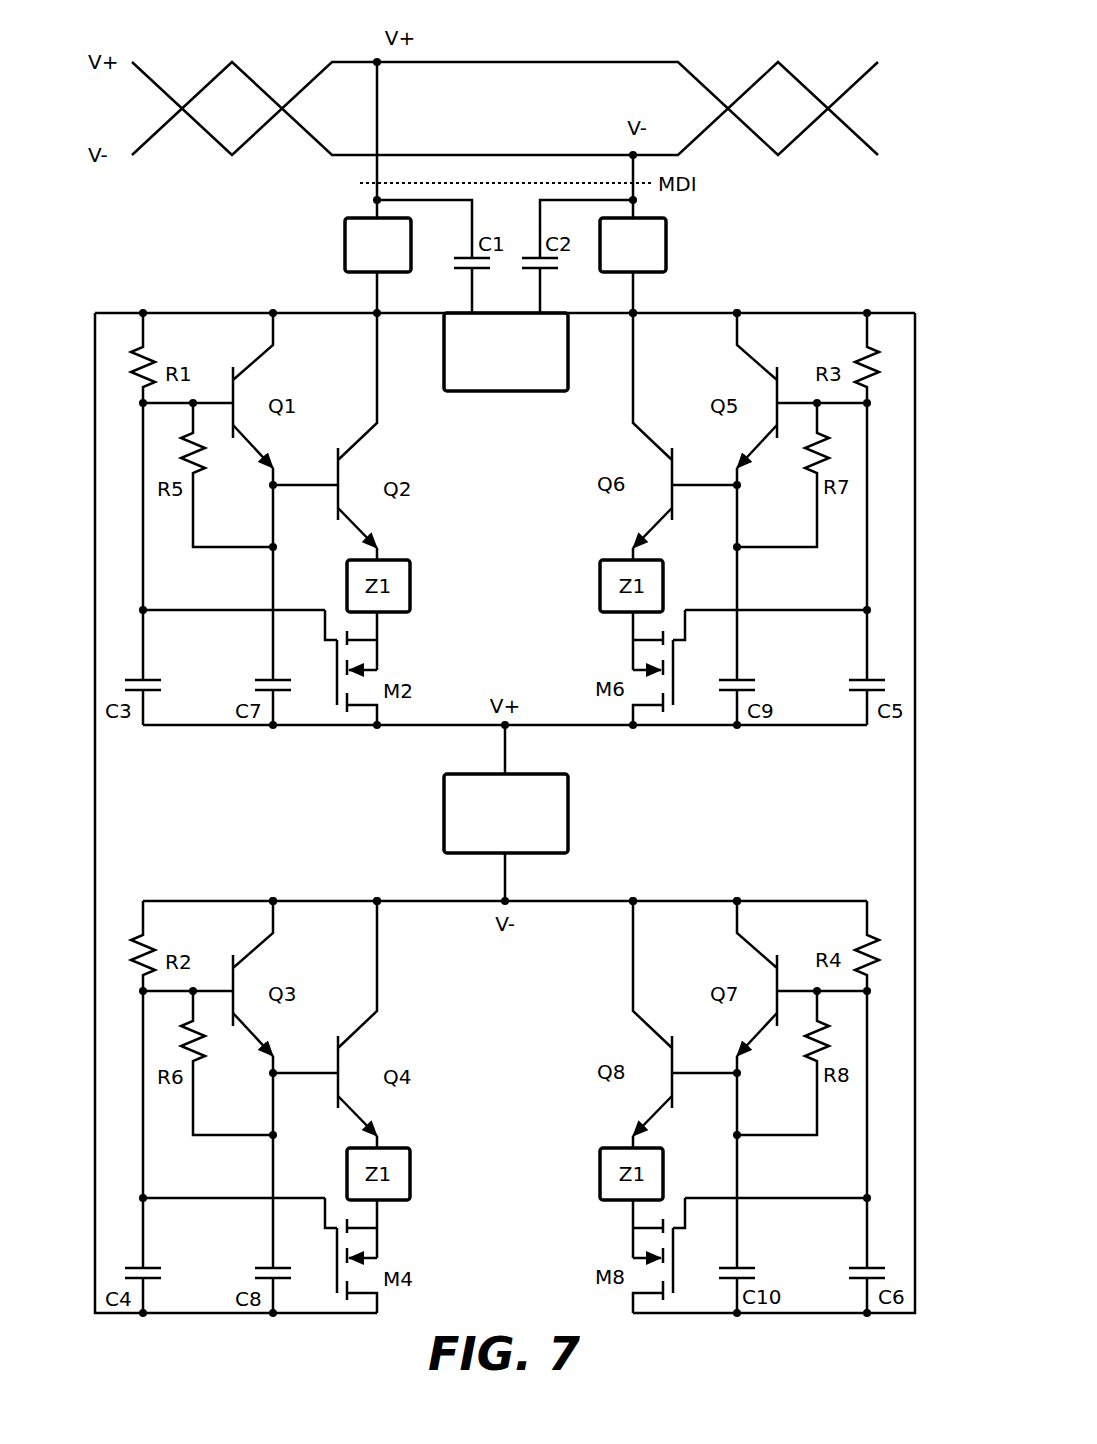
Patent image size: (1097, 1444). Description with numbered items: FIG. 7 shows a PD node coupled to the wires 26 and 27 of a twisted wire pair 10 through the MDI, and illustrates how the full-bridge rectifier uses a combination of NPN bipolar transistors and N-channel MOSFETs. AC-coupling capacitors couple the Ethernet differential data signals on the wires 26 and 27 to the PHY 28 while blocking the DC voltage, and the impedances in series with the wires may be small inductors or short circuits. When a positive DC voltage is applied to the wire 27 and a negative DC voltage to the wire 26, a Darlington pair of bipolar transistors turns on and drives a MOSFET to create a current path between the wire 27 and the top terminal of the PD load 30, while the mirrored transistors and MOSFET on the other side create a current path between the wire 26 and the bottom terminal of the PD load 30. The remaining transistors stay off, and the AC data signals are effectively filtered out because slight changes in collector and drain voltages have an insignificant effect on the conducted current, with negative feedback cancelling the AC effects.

The twisted wire pair 10 is at (334, 32).
The wire 26 is at (140, 150).
The wire 27 is at (142, 68).
The PHY 28 is at (486, 393).
The PD load 30 is at (444, 806).